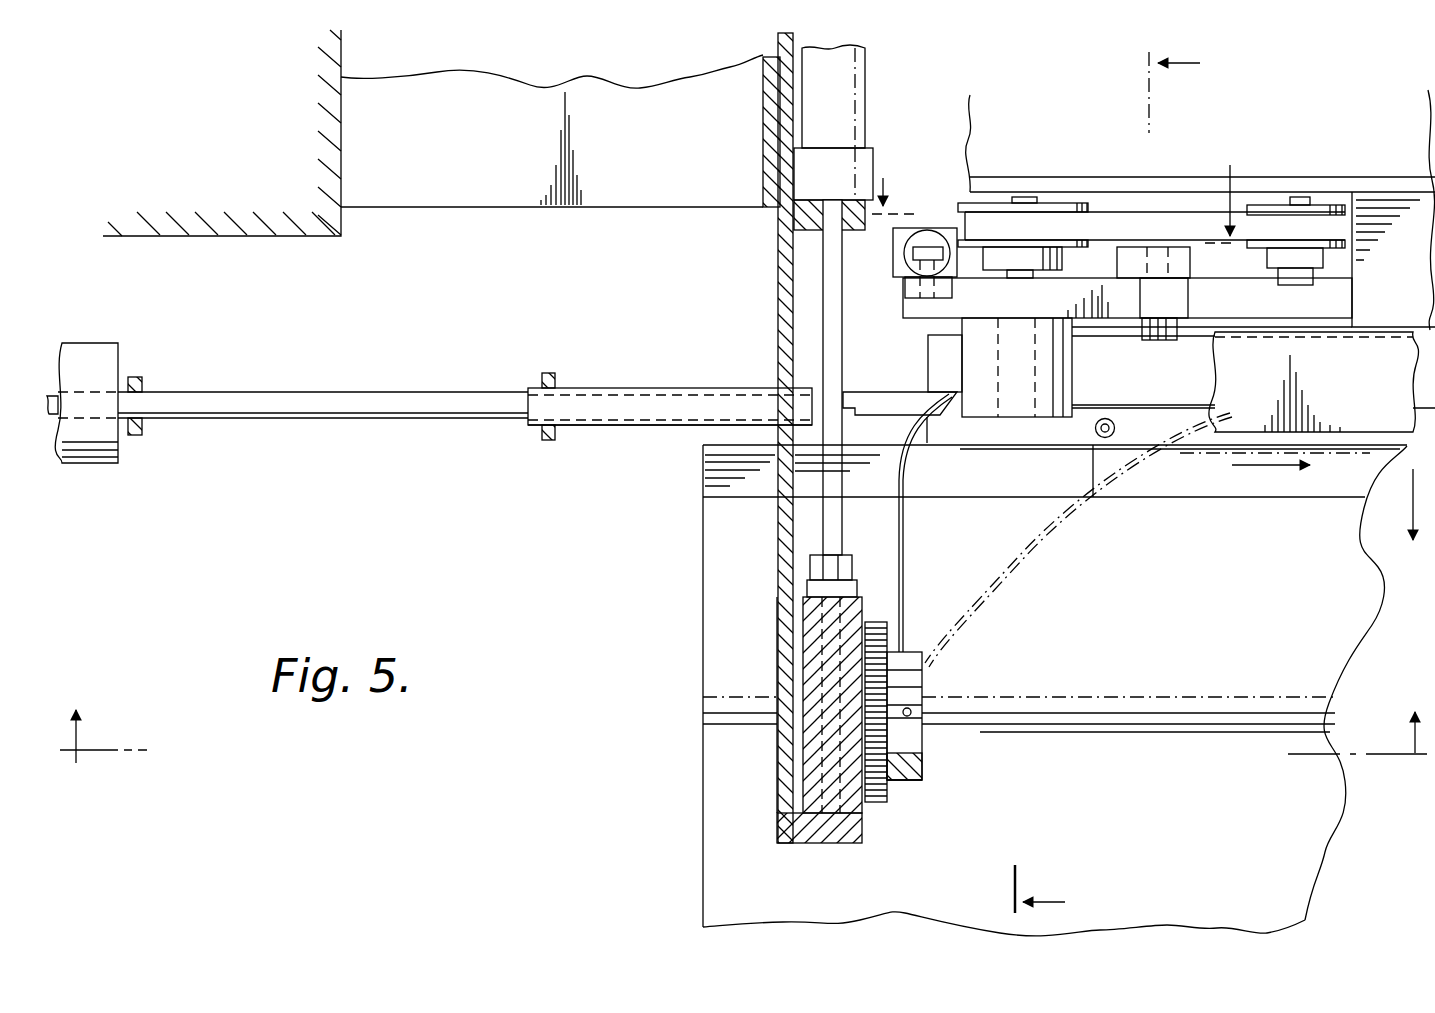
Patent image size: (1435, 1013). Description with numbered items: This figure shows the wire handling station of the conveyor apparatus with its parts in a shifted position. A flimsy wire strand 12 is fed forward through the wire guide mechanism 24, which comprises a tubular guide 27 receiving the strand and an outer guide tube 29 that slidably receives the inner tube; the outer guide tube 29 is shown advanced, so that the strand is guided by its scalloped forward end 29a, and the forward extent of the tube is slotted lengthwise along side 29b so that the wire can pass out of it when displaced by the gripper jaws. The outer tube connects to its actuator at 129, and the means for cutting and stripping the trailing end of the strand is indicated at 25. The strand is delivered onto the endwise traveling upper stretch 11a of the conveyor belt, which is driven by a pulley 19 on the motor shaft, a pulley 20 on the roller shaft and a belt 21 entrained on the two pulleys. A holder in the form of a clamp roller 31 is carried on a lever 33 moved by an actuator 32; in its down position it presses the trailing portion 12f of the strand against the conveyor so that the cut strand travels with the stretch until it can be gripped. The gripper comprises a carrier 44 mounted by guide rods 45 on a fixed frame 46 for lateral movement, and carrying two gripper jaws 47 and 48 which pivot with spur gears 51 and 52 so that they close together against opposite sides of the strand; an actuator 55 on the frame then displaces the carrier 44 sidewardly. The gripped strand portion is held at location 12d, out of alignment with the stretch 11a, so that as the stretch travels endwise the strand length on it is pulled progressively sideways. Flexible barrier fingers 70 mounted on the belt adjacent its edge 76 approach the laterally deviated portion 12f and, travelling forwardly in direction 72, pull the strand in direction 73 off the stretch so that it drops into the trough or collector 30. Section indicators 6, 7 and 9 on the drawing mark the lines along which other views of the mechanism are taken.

The actuator 55 is at (848, 92).
The actuator 32 is at (927, 248).
The pulley 20 is at (1052, 205).
The belt 21 is at (1130, 218).
The pulley 19 is at (1322, 205).
The lever 33 is at (1127, 309).
The clamp roller 31 is at (1060, 358).
The wire strand 12 is at (1118, 405).
The barrier fingers 70 is at (1116, 428).
The cutting and stripping means 25 is at (120, 338).
The tube-to-actuator connection 129 is at (548, 374).
The outer guide tube 29 is at (615, 392).
The tubular guide 27 is at (705, 388).
The wire guide mechanism 24 is at (520, 434).
The slotted side of guide tube 29b is at (866, 426).
The scalloped forward end 29a is at (948, 420).
The upper stretch 11a is at (1033, 434).
The belt edge 76 is at (1093, 449).
The forward travel direction 72 is at (1275, 468).
The pull-off direction 73 is at (1411, 482).
The trailing portion of strand 12f is at (1042, 543).
The trough or collector 30 is at (698, 870).
The displaced strand location 12d is at (910, 712).
The carrier 44 is at (796, 677).
The spur gear 52 is at (875, 622).
The guide rods 45 is at (822, 818).
The fixed frame 46 is at (770, 760).
The spur gear 51 is at (876, 804).
The gripper jaw 48 is at (915, 650).
The gripper jaw 47 is at (922, 745).
The section line 9 is at (1054, 187).
The section line 6 is at (1123, 484).
The section line 7 is at (743, 761).